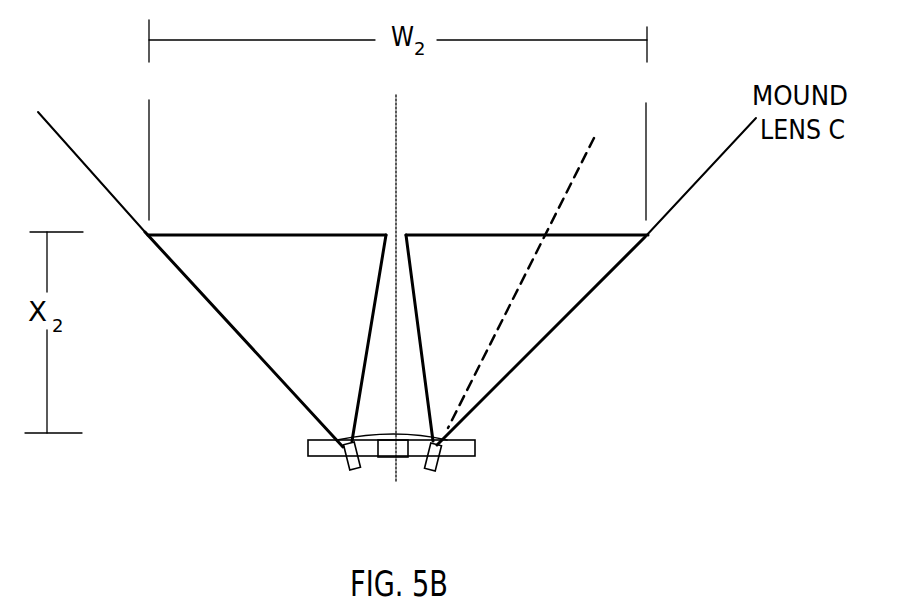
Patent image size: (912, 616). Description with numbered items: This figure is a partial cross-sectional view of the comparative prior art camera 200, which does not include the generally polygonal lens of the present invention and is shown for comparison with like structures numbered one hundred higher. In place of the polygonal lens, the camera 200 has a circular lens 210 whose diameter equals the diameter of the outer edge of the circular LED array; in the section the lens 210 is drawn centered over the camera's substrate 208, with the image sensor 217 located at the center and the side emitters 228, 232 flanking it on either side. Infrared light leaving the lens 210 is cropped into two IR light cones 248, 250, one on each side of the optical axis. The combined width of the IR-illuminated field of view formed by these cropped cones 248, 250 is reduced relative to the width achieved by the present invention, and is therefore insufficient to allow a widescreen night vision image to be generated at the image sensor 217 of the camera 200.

The comparative prior art camera 200 is at (522, 486).
The substrate 208 is at (478, 447).
The circular lens 210 is at (370, 447).
The image sensor 217 is at (398, 460).
The right side light emitting element 228 is at (437, 472).
The left side light emitting element 232 is at (348, 471).
The cropped IR light cone 248 is at (577, 312).
The cropped IR light cone 250 is at (210, 305).